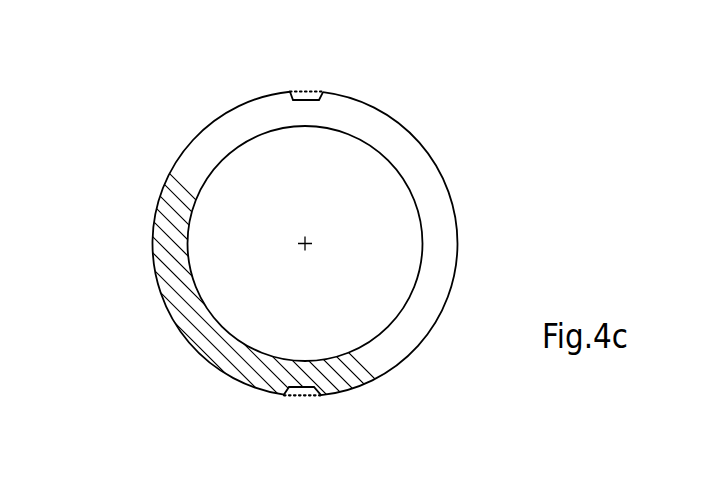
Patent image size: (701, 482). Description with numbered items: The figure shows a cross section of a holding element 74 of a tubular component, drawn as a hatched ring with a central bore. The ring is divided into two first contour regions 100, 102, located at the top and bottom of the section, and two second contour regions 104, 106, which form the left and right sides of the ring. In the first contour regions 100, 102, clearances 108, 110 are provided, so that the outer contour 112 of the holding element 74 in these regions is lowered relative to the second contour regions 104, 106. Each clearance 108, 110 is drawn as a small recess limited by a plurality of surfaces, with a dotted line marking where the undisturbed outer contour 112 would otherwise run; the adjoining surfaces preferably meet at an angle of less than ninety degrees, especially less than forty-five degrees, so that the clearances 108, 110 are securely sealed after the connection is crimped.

The holding element 74 is at (350, 241).
The first contour region 100 is at (291, 55).
The first contour region 102 is at (276, 422).
The second contour region 104 is at (124, 244).
The second contour region 106 is at (486, 250).
The clearance 108 is at (320, 92).
The clearance 110 is at (310, 388).
The outer contour 112 is at (449, 189).